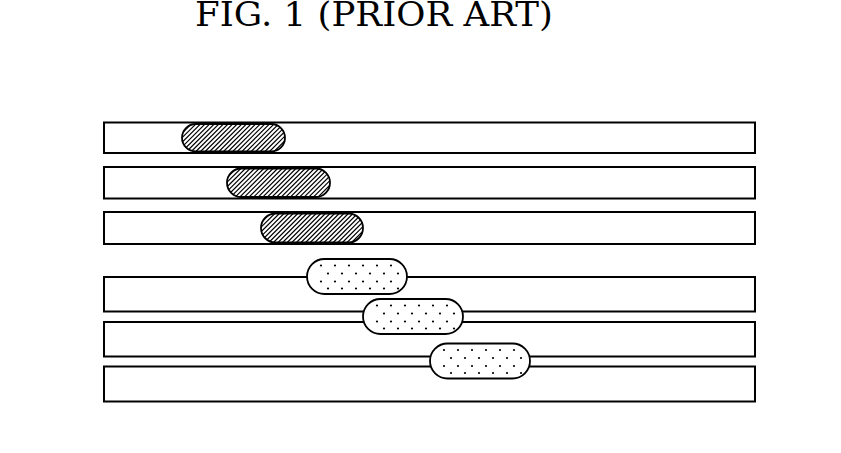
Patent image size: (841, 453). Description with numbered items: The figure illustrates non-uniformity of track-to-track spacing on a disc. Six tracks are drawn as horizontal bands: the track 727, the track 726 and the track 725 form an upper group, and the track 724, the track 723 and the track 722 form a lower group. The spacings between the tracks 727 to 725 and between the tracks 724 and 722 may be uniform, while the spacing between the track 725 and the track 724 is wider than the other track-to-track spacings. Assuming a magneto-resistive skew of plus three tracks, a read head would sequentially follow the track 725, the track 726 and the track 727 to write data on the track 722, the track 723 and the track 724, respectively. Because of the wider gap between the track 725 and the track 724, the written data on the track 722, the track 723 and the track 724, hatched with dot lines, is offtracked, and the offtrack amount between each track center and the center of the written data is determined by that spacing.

The track 722 is at (118, 383).
The track 723 is at (118, 338).
The track 724 is at (118, 293).
The track 725 is at (118, 226).
The track 726 is at (118, 180).
The track 727 is at (118, 136).